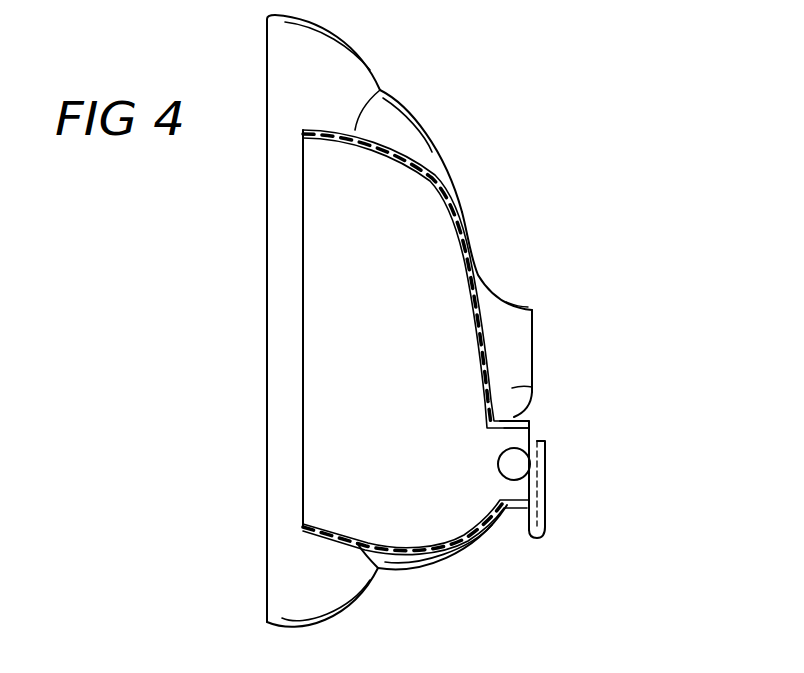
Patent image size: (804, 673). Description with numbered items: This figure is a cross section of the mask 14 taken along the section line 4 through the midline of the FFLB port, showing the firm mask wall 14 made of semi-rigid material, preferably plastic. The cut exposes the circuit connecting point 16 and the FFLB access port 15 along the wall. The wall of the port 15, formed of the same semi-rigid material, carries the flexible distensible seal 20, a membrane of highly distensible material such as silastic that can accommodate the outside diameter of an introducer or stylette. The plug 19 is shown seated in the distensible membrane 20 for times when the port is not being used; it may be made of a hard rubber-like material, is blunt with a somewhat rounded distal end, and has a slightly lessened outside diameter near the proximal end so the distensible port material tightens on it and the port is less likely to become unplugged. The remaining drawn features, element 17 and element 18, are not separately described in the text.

The coupling device 4 is at (322, 313).
The panel 14 is at (467, 213).
The lower lip 15 is at (545, 518).
The side member 16 is at (537, 355).
The housing arc 17 is at (333, 70).
The bracket 18 is at (548, 462).
The ball 19 is at (548, 480).
The bracket top 20 is at (538, 427).